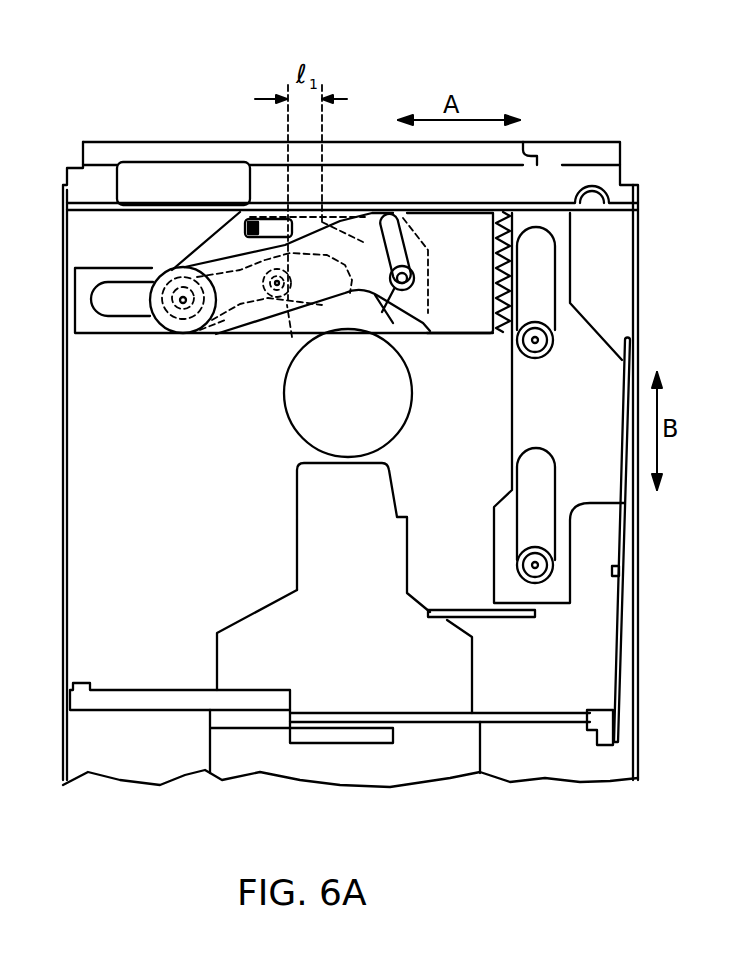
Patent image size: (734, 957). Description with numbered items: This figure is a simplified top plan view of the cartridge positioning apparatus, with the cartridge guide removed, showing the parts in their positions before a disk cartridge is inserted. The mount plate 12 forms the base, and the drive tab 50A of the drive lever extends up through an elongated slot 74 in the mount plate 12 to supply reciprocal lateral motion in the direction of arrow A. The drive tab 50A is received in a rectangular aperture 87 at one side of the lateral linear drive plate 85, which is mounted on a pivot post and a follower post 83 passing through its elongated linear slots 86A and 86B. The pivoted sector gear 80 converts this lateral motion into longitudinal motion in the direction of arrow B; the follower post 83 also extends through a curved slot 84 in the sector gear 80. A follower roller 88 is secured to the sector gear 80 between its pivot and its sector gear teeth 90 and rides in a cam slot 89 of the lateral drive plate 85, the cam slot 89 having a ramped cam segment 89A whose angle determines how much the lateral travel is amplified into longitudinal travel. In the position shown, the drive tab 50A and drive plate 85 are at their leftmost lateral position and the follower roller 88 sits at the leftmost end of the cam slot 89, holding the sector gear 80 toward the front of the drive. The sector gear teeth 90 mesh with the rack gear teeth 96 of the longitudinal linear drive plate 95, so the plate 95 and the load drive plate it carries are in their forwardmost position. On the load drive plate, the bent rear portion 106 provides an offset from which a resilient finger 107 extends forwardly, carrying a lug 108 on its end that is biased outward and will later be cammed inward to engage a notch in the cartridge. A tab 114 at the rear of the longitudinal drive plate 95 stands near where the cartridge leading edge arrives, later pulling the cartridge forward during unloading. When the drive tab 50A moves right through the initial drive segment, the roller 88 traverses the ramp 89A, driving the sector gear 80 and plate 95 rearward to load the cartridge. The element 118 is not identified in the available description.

The mount plate 12 is at (640, 280).
The drive tab 50A is at (267, 218).
The elongated slot 74 is at (340, 210).
The sector gear 80 is at (320, 331).
The follower post 83 is at (416, 284).
The curved slot 84 is at (405, 222).
The lateral linear drive plate 85 is at (135, 336).
The elongated linear slot 86A is at (103, 316).
The elongated linear slot 86B is at (403, 331).
The rectangular aperture 87 is at (233, 212).
The follower roller 88 is at (292, 337).
The cam slot 89 is at (205, 343).
The ramped cam segment 89A is at (270, 300).
The sector gear teeth 90 is at (500, 210).
The longitudinal linear drive plate 95 is at (512, 427).
The rack gear teeth 96 is at (512, 212).
The rear portion 106 is at (620, 725).
The resilient finger 107 is at (615, 695).
The lug 108 is at (612, 573).
The tab 114 is at (500, 618).
The bar 118 is at (430, 620).